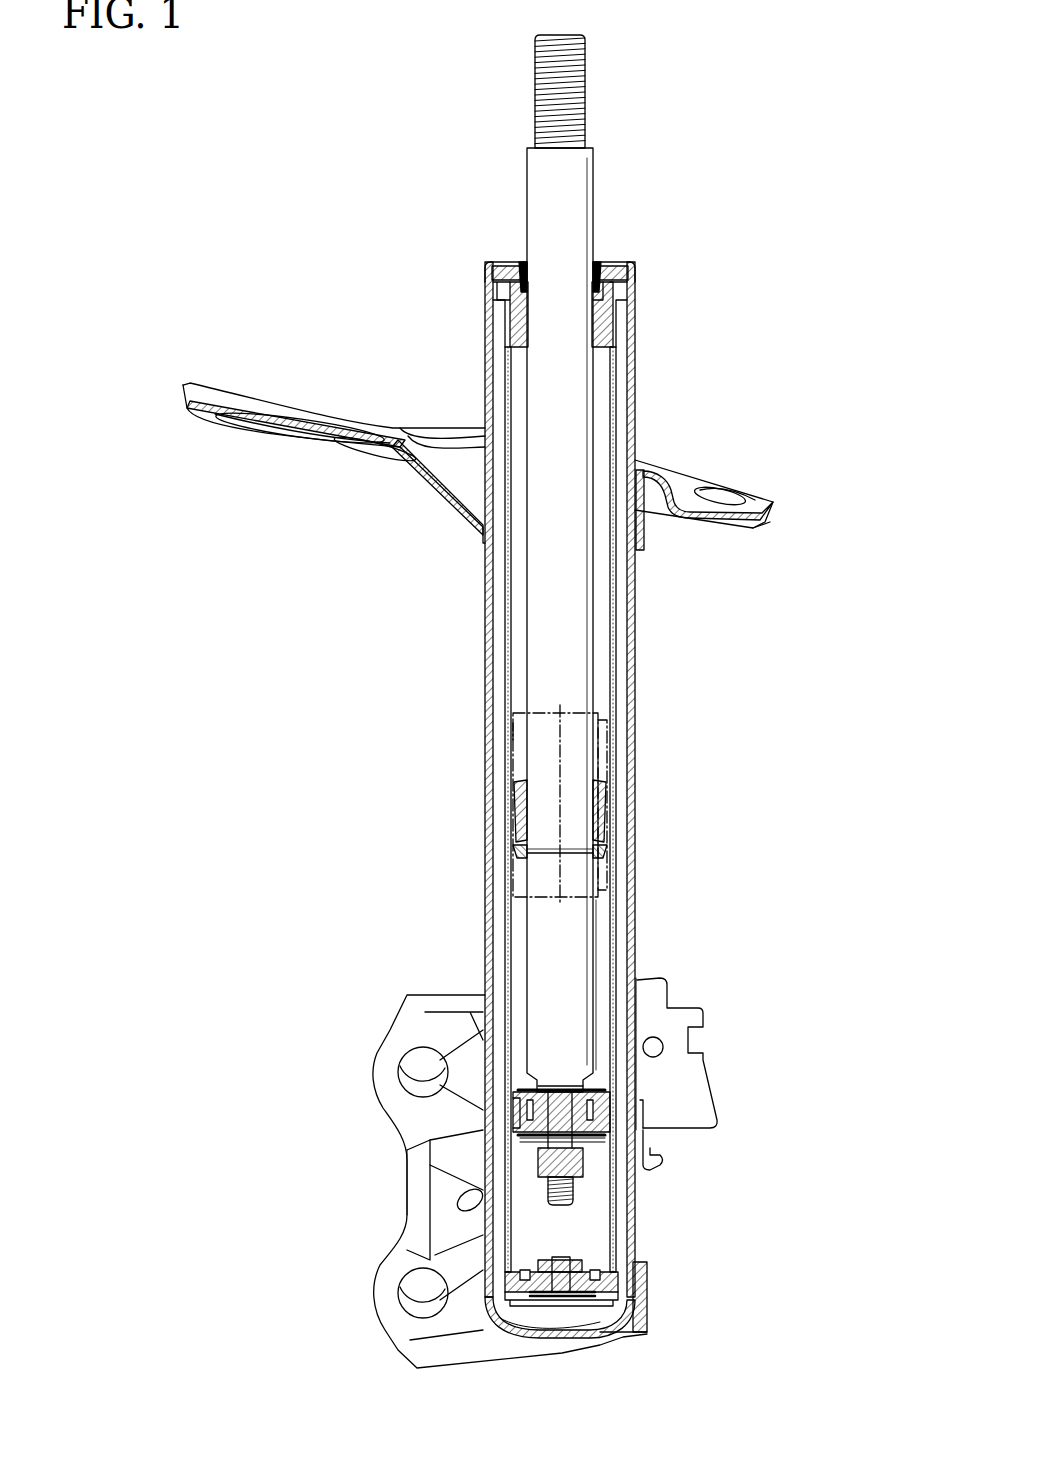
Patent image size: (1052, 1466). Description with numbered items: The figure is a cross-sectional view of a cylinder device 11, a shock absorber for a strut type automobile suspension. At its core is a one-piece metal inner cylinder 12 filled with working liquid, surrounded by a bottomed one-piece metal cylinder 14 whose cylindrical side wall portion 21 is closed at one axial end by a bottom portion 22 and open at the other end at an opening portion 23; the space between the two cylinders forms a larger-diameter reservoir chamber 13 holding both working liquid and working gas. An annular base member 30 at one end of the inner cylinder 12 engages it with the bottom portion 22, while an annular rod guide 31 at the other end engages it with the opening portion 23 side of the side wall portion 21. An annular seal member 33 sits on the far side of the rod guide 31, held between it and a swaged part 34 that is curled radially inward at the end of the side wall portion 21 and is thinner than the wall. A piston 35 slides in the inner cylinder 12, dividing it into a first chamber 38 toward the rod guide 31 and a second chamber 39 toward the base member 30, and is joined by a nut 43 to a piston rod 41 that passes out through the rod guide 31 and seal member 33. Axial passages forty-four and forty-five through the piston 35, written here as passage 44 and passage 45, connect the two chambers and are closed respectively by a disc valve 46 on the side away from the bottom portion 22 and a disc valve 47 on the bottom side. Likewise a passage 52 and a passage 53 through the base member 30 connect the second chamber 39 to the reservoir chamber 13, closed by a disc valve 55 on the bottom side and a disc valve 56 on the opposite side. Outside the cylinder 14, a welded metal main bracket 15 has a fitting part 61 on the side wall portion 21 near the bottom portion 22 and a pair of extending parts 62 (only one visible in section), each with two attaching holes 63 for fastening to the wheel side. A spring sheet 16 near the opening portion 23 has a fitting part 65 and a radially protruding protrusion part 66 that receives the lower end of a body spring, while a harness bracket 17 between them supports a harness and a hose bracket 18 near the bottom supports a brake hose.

The cylinder device 11 is at (688, 90).
The inner cylinder 12 is at (615, 727).
The reservoir chamber 13 is at (620, 788).
The cylinder 14 is at (652, 658).
The main bracket 15 is at (388, 1020).
The spring sheet 16 is at (776, 492).
The harness bracket 17 is at (513, 730).
The hose bracket 18 is at (700, 1026).
The side wall portion 21 is at (632, 760).
The bottom portion 22 is at (600, 1340).
The opening portion 23 is at (602, 264).
The base member 30 is at (612, 1280).
The rod guide 31 is at (615, 292).
The seal member 33 is at (520, 262).
The swaged part 34 is at (508, 262).
The piston 35 is at (615, 1090).
The first chamber 38 is at (608, 935).
The second chamber 39 is at (600, 1205).
The piston rod 41 is at (604, 193).
The nut 43 is at (612, 1165).
The passage 44 is at (620, 1110).
The passage 45 is at (512, 1097).
The disc valve 46 is at (602, 1072).
The disc valve 47 is at (525, 1140).
The passage 52 is at (510, 1285).
The passage 53 is at (585, 1293).
The disc valve 55 is at (530, 1320).
The disc valve 56 is at (585, 1268).
The fitting part 61 is at (640, 995).
The extending parts 62 is at (415, 1117).
The attaching holes 63 is at (430, 1065).
The fitting part 65 is at (645, 545).
The protrusion part 66 is at (770, 525).